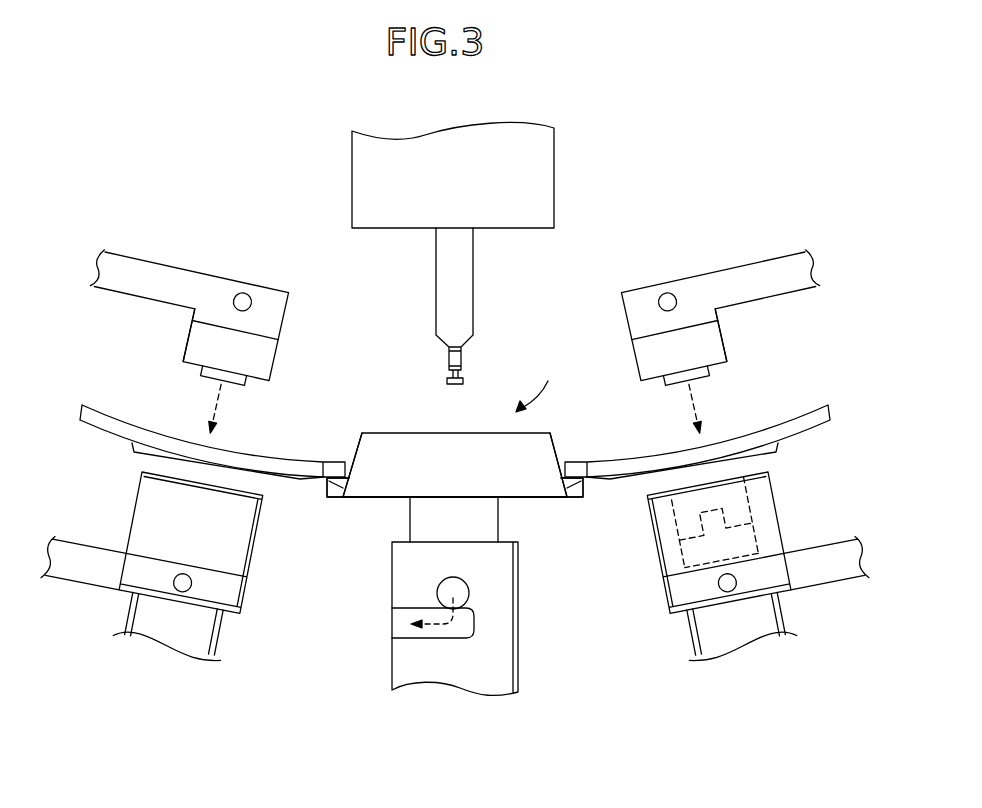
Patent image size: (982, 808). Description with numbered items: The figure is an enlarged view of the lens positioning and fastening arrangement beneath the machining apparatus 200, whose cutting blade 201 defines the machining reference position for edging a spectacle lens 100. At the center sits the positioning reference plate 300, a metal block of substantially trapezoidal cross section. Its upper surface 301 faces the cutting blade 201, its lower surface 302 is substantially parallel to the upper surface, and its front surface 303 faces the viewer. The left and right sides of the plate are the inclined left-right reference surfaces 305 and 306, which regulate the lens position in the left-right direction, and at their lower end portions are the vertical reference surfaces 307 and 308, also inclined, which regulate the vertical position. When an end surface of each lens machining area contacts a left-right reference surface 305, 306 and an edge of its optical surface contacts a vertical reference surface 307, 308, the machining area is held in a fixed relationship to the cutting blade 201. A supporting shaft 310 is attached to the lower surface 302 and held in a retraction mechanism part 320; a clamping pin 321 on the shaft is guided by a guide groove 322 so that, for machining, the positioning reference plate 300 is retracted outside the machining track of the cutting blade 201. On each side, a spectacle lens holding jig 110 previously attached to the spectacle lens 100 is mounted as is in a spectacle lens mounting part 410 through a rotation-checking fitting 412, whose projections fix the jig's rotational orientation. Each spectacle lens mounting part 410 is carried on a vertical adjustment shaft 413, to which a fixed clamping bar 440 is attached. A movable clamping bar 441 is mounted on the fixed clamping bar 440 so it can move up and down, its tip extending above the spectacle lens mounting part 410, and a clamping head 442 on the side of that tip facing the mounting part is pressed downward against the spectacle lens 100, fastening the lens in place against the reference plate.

The spectacle lens 100 is at (103, 418).
The spectacle lens holding jig 110 is at (148, 450).
The machining apparatus 200 is at (538, 177).
The cutting blade 201 is at (465, 302).
The positioning reference plate 300 is at (580, 377).
The upper surface 301 is at (402, 433).
The lower surface 302 is at (553, 498).
The front surface 303 is at (380, 482).
The left-right reference surface 305 is at (355, 450).
The left-right reference surface 306 is at (557, 446).
The vertical reference surface 307 is at (332, 485).
The vertical reference surface 308 is at (578, 485).
The supporting shaft 310 is at (500, 516).
The retraction mechanism part 320 is at (508, 617).
The clamping pin 321 is at (445, 589).
The guide groove 322 is at (403, 628).
The spectacle lens mounting part 410 is at (136, 505).
The rotation-checking fitting 412 is at (213, 630).
The vertical adjustment shaft 413 is at (700, 632).
The fixed clamping bar 440 is at (68, 578).
The movable clamping bar 441 is at (170, 275).
The clamping head 442 is at (190, 336).